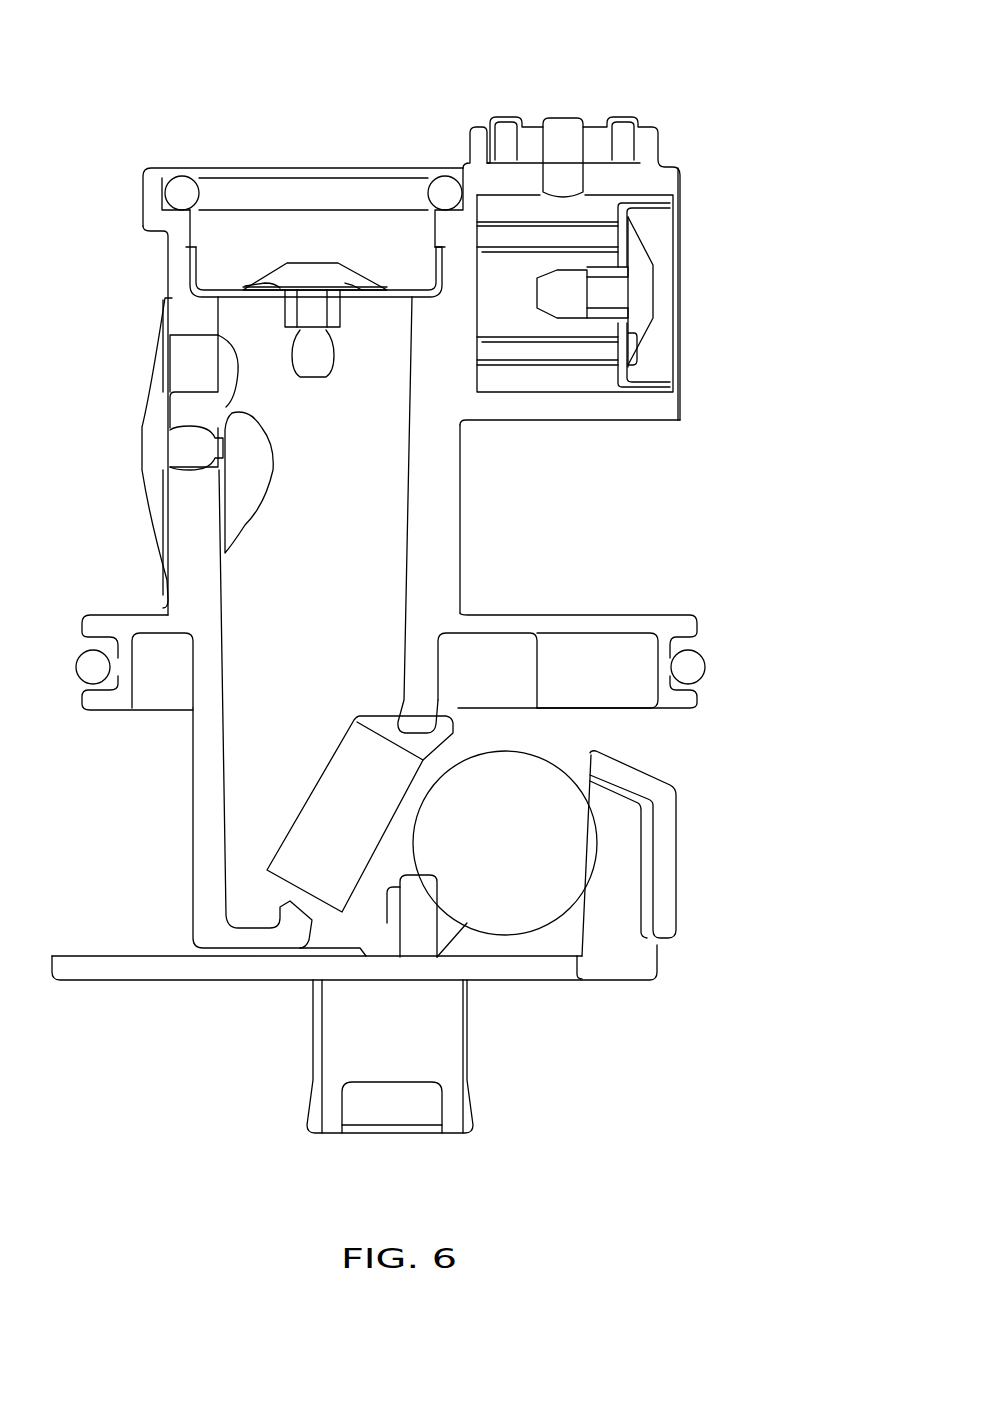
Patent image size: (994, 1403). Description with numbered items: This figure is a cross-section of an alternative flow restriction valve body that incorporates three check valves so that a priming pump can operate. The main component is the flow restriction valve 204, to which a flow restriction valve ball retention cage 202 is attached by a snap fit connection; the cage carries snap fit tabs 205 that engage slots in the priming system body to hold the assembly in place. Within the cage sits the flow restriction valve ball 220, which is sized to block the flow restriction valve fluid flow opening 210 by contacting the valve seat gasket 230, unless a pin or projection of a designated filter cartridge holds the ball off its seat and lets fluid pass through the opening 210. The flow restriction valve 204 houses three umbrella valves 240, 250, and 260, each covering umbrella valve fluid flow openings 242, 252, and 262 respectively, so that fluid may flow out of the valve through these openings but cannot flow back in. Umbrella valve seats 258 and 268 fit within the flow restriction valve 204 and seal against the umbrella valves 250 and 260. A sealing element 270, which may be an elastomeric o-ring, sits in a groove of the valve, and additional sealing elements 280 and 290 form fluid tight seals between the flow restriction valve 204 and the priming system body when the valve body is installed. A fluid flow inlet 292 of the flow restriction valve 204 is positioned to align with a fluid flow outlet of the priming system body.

The flow restriction valve ball retention cage 202 is at (640, 958).
The flow restriction valve 204 is at (445, 484).
The snap fit tabs 205 is at (398, 1103).
The flow restriction valve fluid flow opening 210 is at (310, 820).
The flow restriction valve ball 220 is at (527, 905).
The valve seat gasket 230 is at (317, 923).
The umbrella valve 240 is at (148, 452).
The umbrella valve fluid flow openings 242 is at (185, 363).
The umbrella valve 250 is at (318, 272).
The umbrella valve fluid flow opening 252 is at (357, 283).
The umbrella valve seat 258 is at (207, 270).
The umbrella valve 260 is at (646, 278).
The umbrella valve fluid flow opening 262 is at (628, 348).
The umbrella valve seat 268 is at (660, 378).
The sealing element 270 is at (688, 662).
The sealing element 280 is at (180, 190).
The sealing element 290 is at (625, 130).
The fluid flow inlet 292 is at (557, 170).